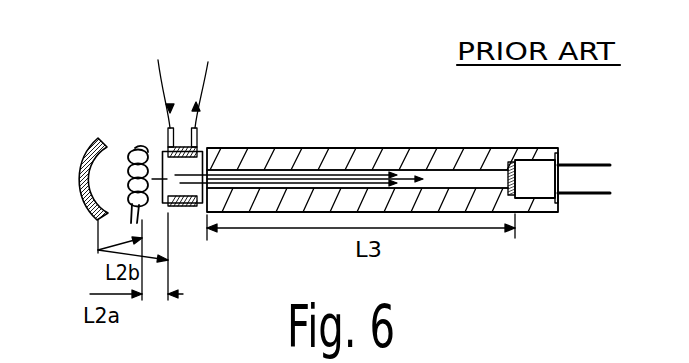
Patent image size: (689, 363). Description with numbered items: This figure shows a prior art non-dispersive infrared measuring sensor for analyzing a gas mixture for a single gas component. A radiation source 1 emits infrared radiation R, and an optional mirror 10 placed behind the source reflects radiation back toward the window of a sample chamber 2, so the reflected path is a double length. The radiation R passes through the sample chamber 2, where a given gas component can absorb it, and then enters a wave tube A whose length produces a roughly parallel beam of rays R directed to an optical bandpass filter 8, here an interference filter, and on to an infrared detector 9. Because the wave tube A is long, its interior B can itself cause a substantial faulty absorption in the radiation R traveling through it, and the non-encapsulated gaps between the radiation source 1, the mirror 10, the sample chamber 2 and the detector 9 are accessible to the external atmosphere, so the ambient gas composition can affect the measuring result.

The mirror 10 is at (89, 149).
The radiation source 1 is at (149, 158).
The sample chamber 2 is at (179, 194).
The optical bandpass filter 8 is at (512, 162).
The infrared detector 9 is at (538, 162).
The wave tube A is at (305, 157).
The wave tube interior B is at (347, 177).
The radiation R is at (383, 180).